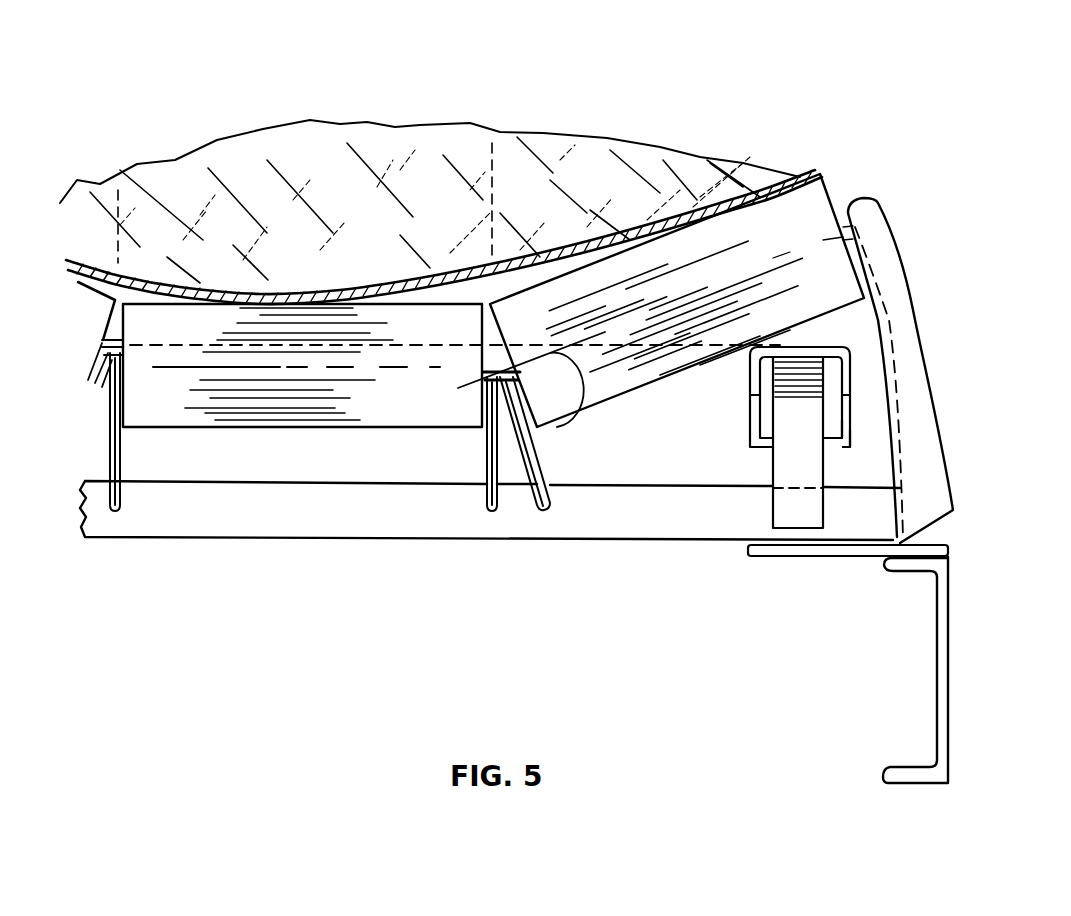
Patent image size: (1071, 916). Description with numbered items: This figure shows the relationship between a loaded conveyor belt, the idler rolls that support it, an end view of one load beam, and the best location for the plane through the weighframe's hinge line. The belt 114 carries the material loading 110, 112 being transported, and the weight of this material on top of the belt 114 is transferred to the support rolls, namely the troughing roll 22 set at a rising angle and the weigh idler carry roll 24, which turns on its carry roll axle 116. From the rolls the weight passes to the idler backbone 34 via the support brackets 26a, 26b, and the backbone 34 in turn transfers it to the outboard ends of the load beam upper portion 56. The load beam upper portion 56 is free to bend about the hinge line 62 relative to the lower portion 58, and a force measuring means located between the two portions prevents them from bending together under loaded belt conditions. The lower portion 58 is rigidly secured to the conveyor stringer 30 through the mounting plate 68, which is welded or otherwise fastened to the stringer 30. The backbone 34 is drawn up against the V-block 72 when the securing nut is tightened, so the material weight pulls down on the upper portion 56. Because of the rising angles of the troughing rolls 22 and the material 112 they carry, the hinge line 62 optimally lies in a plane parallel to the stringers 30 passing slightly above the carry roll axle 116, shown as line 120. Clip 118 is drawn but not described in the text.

The troughing roll 22 is at (813, 223).
The weigh idler carry roll 24 is at (445, 413).
The support bracket 26a is at (122, 450).
The support bracket 26b is at (863, 198).
The conveyor stringer 30 is at (937, 663).
The idler backbone 34 is at (302, 526).
The load beam upper portion 56 is at (863, 330).
The load beam lower portion 58 is at (853, 423).
The hinge line 62 is at (613, 347).
The mounting plate 68 is at (747, 552).
The V-block 72 is at (770, 467).
The material loading 110 is at (327, 163).
The material 112 is at (85, 212).
The belt 114 is at (790, 172).
The carry roll axle 116 is at (388, 368).
The center clip 118 is at (560, 410).
The line 120 is at (125, 424).